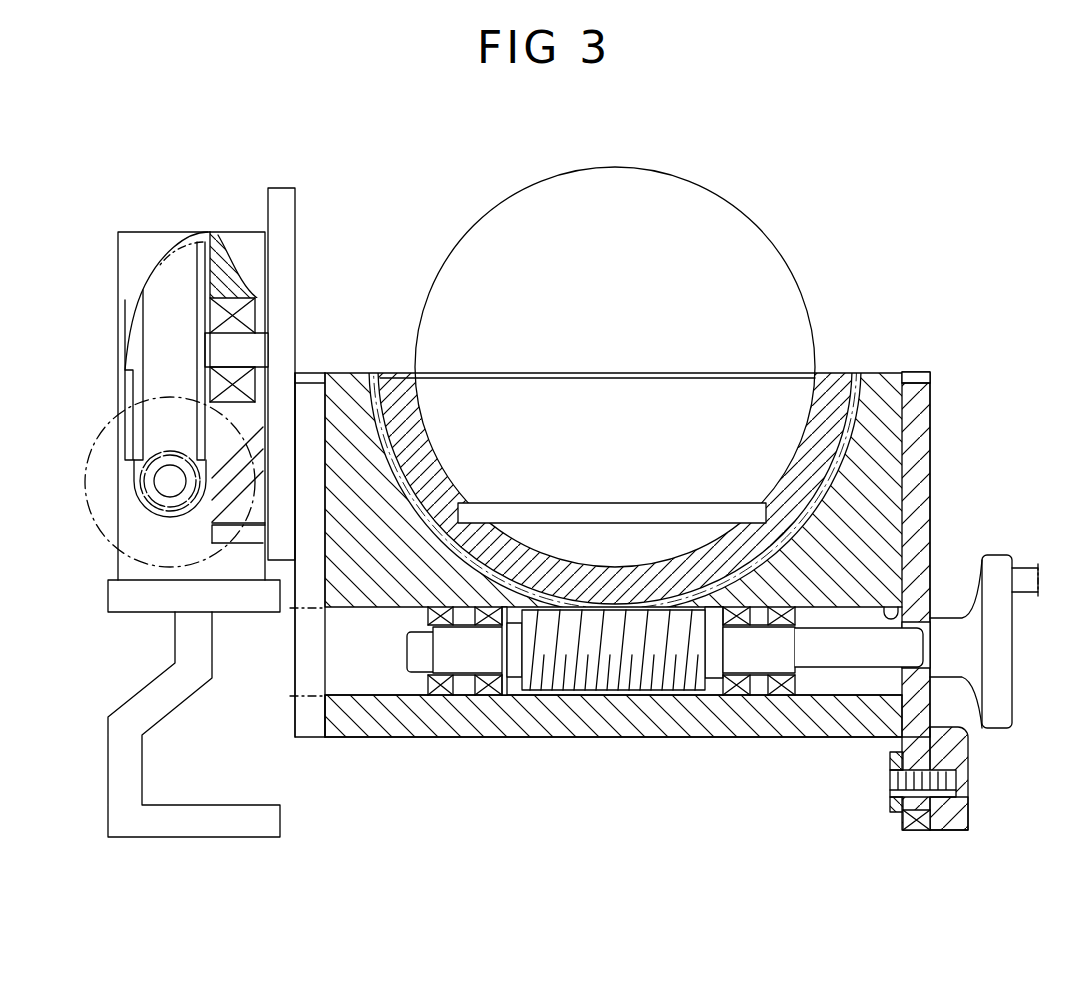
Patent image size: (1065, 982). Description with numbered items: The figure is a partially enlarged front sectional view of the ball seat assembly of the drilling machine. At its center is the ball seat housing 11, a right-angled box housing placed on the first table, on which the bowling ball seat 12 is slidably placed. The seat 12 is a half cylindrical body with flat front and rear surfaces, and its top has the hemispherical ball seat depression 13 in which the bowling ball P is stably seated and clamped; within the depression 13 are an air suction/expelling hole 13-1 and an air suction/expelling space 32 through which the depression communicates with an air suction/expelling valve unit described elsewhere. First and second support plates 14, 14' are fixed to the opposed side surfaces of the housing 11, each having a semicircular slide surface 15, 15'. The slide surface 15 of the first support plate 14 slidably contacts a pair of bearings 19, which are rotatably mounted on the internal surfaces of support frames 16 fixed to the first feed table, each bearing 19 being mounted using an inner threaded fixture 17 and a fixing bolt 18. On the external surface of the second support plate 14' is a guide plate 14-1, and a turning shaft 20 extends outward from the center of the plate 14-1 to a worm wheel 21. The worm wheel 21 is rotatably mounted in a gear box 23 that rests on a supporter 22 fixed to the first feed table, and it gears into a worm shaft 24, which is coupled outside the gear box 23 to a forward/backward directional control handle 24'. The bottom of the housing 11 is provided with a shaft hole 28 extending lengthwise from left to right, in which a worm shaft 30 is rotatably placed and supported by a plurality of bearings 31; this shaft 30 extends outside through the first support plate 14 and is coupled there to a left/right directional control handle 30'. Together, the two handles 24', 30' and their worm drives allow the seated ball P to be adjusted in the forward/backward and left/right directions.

The bowling ball P is at (743, 198).
The ball seat housing 11 is at (893, 372).
The bowling ball seat 12 is at (839, 372).
The hemispherical ball seat depression 13 is at (422, 394).
The air suction/expelling hole 13-1 is at (610, 528).
The first support plate 14 is at (952, 601).
The second support plate 14' is at (278, 555).
The guide plate 14-1 is at (296, 222).
The semicircular slide surface 15 is at (991, 778).
The semicircular slide surface 15' is at (606, 755).
The support frame 16 is at (948, 832).
The inner threaded fixture 17 is at (888, 804).
The fixing bolt 18 is at (958, 785).
The bearing 19 is at (915, 832).
The turning shaft 20 is at (264, 348).
The worm wheel 21 is at (155, 343).
The supporter 22 is at (118, 793).
The gear box 23 is at (124, 562).
The worm shaft 24 is at (111, 462).
The forward/backward directional control handle 24' is at (137, 482).
The shaft hole 28 is at (918, 590).
The worm shaft 30 is at (665, 711).
The left/right directional control handle 30' is at (995, 603).
The bearings 31 is at (486, 693).
The air suction/expelling space 32 is at (559, 693).